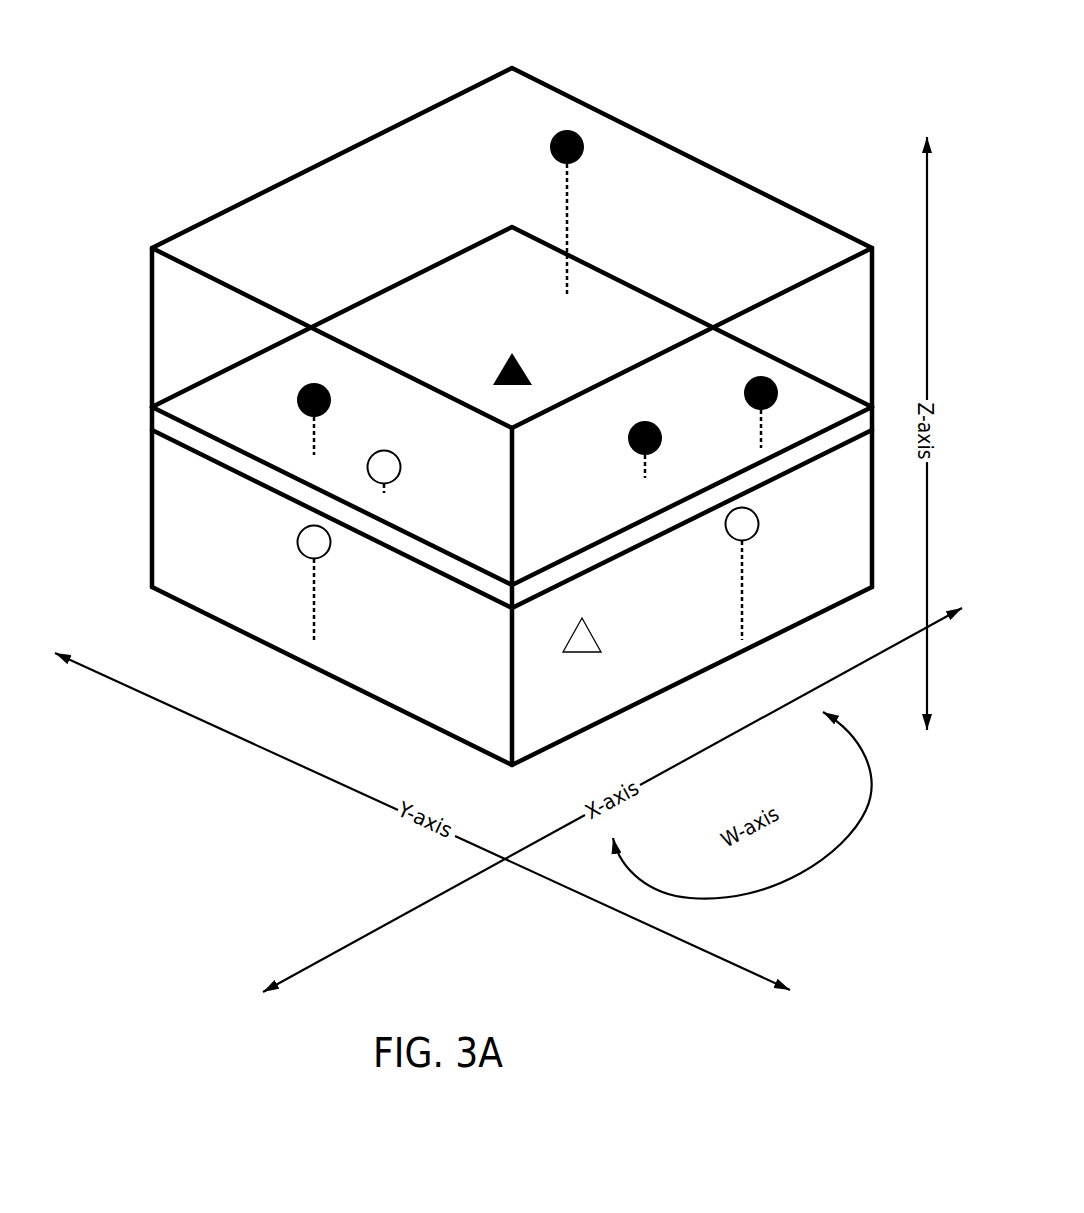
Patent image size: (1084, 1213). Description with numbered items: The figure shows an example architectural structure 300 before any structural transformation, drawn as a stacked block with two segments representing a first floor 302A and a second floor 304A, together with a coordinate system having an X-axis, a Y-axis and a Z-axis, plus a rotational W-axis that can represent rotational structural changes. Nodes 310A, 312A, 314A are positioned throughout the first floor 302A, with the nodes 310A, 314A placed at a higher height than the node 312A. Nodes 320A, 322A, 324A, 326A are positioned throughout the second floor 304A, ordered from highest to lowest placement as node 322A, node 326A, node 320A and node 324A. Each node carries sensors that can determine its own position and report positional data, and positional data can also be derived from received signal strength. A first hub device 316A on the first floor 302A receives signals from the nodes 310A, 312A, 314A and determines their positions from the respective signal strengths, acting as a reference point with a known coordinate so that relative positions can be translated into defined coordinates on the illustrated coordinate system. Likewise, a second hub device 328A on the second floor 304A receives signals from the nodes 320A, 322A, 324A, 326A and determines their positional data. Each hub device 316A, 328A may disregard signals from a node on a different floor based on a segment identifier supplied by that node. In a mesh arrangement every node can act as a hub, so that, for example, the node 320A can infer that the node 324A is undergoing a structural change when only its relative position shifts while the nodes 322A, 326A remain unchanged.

The architectural structure 300 is at (636, 66).
The first floor 302A is at (152, 497).
The second floor 304A is at (152, 283).
The node 310A is at (297, 542).
The node 312A is at (401, 468).
The node 314A is at (756, 512).
The first hub device 316A is at (589, 648).
The node 320A is at (298, 399).
The node 322A is at (551, 143).
The node 324A is at (629, 437).
The node 326A is at (745, 392).
The second hub device 328A is at (511, 384).